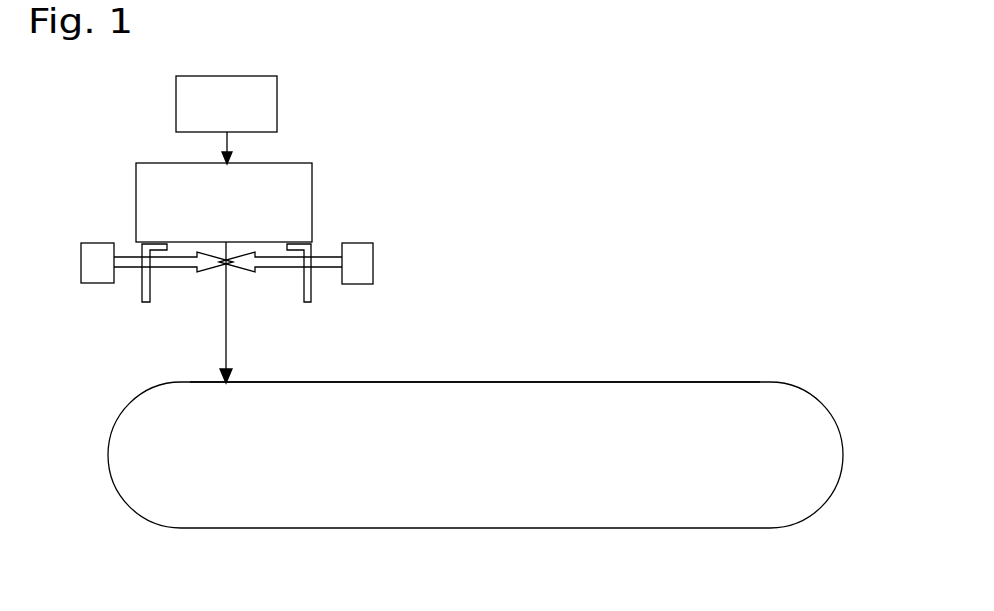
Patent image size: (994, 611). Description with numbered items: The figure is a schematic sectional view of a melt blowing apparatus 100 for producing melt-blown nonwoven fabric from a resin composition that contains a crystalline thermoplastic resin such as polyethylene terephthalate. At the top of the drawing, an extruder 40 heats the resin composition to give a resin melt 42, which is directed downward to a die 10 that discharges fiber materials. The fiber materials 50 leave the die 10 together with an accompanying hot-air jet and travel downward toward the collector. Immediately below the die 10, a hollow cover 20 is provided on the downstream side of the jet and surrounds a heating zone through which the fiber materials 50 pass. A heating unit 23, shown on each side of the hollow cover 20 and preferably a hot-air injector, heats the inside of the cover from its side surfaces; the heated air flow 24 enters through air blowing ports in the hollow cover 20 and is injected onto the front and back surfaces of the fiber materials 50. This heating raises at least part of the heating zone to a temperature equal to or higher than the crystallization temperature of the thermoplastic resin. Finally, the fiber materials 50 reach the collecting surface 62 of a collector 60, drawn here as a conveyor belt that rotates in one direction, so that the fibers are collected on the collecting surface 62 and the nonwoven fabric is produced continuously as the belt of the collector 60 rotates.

The melt blowing apparatus 100 is at (590, 121).
The die 10 is at (287, 207).
The hollow cover 20 is at (142, 284).
The heating unit 23 is at (81, 270).
The heated air flow 24 is at (130, 250).
The extruder 40 is at (262, 118).
The resin melt 42 is at (227, 146).
The fiber materials 50 is at (223, 344).
The collector 60 is at (583, 528).
The collecting surface 62 is at (233, 377).